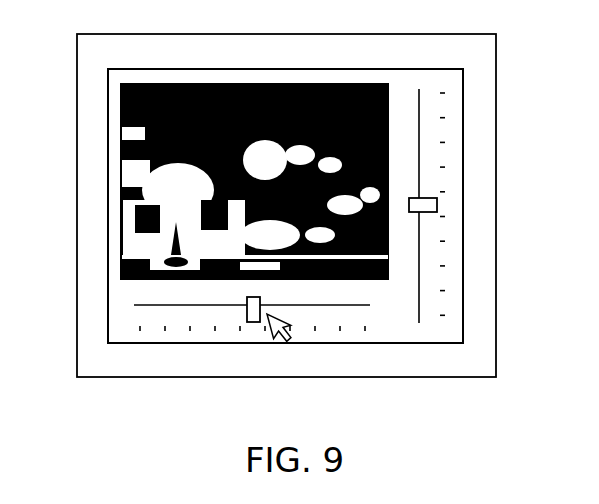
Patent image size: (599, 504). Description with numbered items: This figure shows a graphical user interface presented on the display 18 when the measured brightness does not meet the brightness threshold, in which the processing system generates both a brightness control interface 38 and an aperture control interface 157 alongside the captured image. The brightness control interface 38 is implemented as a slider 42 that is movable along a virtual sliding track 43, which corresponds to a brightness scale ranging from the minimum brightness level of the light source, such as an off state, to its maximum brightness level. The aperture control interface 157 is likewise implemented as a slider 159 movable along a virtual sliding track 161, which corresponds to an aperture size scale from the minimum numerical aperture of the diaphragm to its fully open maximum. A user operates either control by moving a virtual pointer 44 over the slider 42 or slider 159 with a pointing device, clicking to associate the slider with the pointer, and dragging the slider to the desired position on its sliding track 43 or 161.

The display 18 is at (496, 96).
The virtual sliding track 43 is at (421, 88).
The slider 42 is at (426, 204).
The brightness control interface 38 is at (448, 295).
The virtual sliding track 161 is at (137, 309).
The slider 159 is at (253, 323).
The aperture control interface 157 is at (163, 330).
The virtual pointer 44 is at (291, 333).